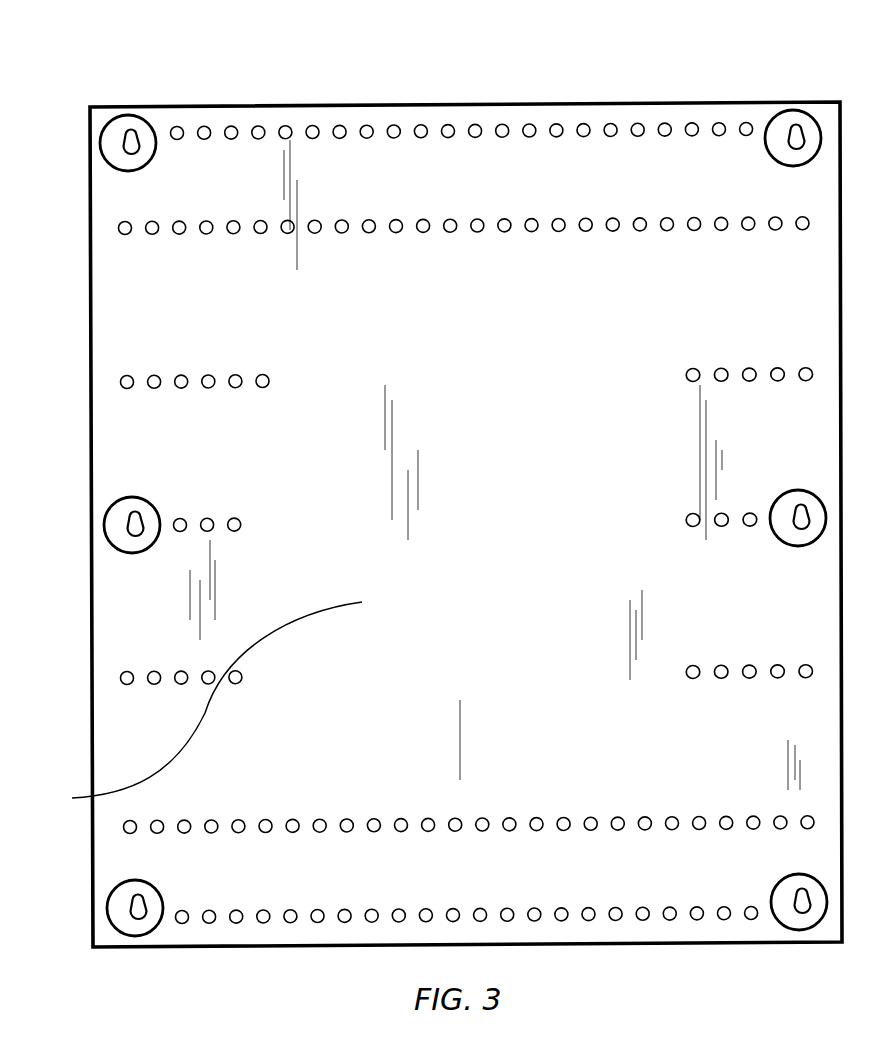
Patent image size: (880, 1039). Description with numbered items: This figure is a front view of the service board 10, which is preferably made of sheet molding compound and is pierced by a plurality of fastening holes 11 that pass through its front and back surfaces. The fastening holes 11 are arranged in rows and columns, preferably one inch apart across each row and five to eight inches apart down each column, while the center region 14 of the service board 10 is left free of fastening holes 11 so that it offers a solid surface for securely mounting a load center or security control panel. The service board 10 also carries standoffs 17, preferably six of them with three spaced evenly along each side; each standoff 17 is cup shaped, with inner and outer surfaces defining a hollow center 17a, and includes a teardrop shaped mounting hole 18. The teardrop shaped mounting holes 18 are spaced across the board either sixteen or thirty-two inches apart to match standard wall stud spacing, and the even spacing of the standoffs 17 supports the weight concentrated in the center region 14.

The service board 10 is at (368, 103).
The fastening holes 11 is at (500, 128).
The center region 14 is at (204, 704).
The standoffs 17 is at (423, 498).
The hollow center 17a is at (105, 142).
The teardrop shaped mounting hole 18 is at (133, 133).